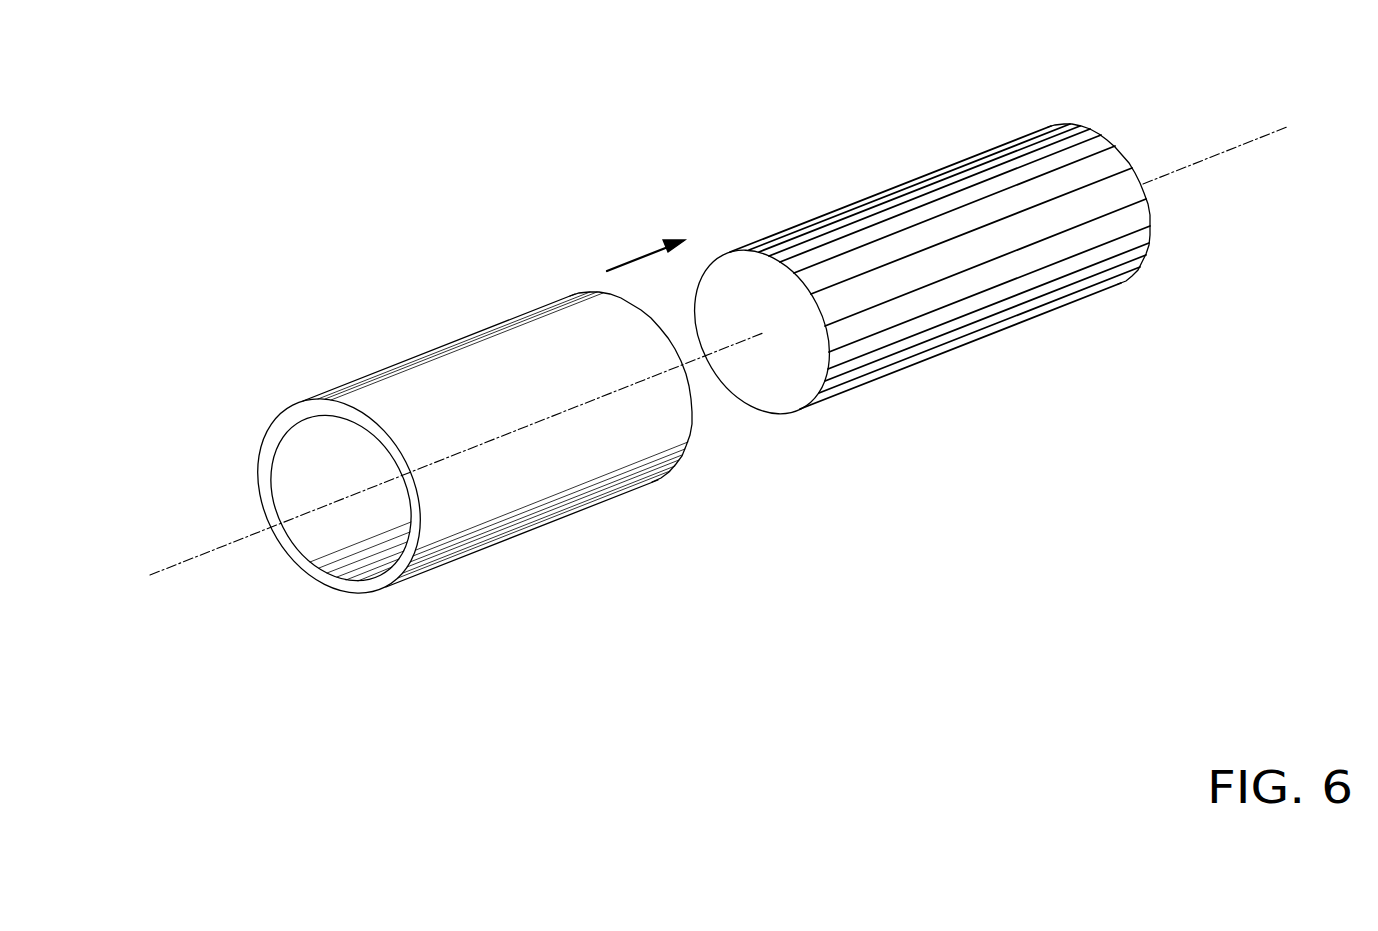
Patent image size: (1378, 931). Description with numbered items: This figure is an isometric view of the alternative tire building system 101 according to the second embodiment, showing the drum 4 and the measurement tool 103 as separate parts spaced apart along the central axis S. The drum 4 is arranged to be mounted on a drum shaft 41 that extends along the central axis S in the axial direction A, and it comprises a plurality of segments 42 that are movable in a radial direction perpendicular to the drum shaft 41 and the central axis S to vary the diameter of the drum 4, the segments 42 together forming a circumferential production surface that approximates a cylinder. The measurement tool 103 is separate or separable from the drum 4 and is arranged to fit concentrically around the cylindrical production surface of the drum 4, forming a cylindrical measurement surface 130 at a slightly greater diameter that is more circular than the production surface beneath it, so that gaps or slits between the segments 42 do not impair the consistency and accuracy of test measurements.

The alternative tire building system 101 is at (332, 163).
The cylindrical measurement surface 130 is at (485, 508).
The measurement tool 103 is at (363, 585).
The drum 4 is at (825, 213).
The drum shaft 41 is at (930, 195).
The segments 42 is at (1120, 158).
The axial direction A is at (646, 248).
The central axis S is at (731, 336).